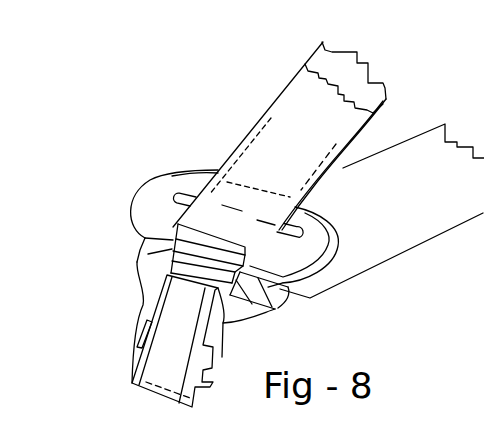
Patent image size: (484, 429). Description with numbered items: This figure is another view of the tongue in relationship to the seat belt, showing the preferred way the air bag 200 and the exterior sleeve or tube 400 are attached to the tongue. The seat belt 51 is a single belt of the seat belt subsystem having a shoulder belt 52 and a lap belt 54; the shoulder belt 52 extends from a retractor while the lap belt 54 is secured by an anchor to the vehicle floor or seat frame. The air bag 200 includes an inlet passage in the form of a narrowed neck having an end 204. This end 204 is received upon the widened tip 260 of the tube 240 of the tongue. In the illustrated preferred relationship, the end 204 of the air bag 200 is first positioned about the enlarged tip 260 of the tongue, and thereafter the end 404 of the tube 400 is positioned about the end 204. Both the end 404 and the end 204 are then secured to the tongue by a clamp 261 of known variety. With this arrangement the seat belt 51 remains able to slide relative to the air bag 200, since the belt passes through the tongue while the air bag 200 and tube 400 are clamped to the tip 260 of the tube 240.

The tube 400 is at (270, 84).
The air bag 200 is at (241, 143).
The seat belt 51 is at (361, 139).
The shoulder belt 52 is at (355, 150).
The lap belt 54 is at (378, 244).
The widened tip 260 is at (178, 230).
The clamp 261 is at (148, 254).
The tube 240 is at (172, 352).
The end of tube 404 is at (218, 287).
The end 204 is at (218, 287).